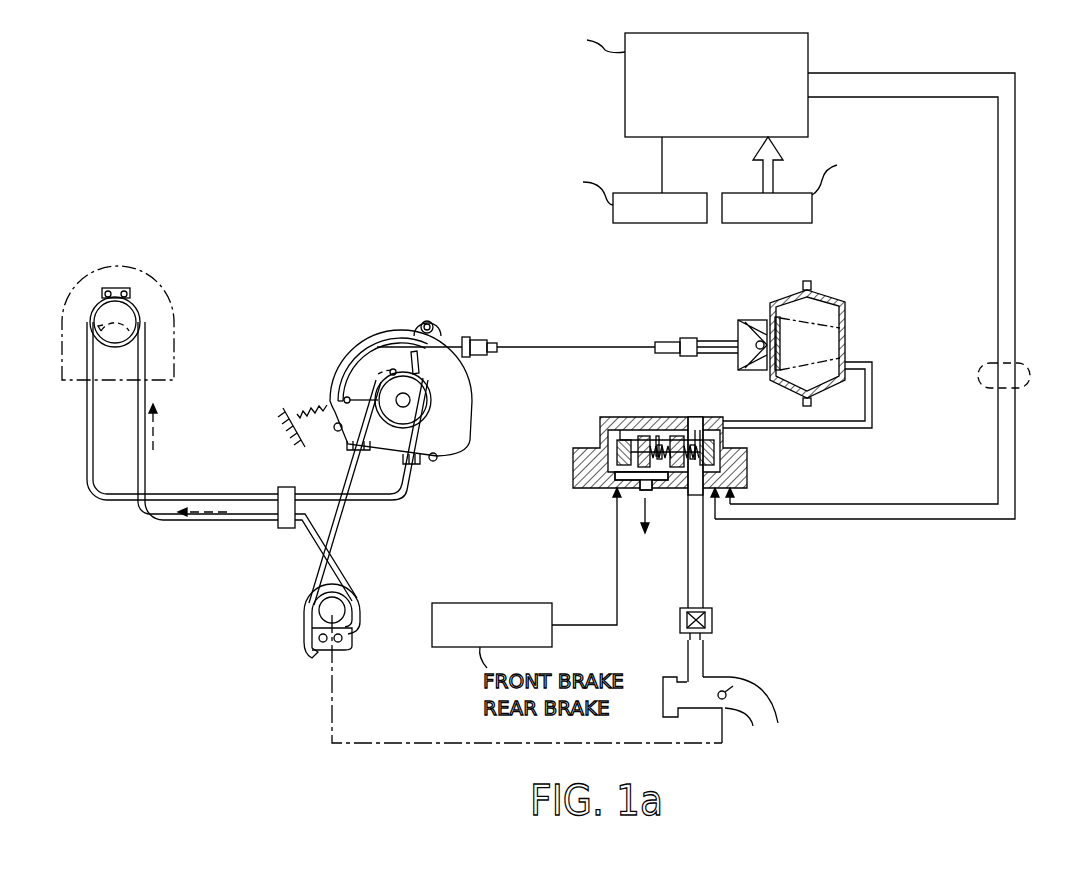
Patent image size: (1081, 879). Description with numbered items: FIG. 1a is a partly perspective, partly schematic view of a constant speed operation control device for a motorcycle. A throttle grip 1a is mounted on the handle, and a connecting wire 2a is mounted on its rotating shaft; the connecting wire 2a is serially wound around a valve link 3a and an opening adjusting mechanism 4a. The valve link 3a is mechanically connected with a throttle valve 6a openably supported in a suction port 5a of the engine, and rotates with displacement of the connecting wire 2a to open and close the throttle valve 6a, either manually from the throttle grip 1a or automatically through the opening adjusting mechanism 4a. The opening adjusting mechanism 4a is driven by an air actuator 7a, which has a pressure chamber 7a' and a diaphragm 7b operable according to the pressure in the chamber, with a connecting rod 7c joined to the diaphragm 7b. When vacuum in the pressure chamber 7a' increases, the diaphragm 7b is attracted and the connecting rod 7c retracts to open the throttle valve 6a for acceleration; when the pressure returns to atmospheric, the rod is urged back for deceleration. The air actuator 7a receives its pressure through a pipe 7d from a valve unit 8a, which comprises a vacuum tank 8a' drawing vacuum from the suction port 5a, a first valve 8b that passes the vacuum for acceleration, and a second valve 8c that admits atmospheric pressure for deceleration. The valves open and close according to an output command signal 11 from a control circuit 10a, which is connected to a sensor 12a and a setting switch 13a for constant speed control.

The throttle grip 1a is at (137, 306).
The connecting wire 2a is at (128, 500).
The valve link 3a is at (353, 598).
The opening adjusting mechanism 4a is at (377, 365).
The suction port 5a is at (779, 696).
The throttle valve 6a is at (724, 690).
The air actuator 7a is at (839, 341).
The pressure chamber 7a' is at (845, 343).
The diaphragm 7b is at (760, 320).
The connecting rod 7c is at (572, 347).
The pipe 7d is at (872, 395).
The valve unit 8a is at (677, 521).
The vacuum tank 8a' is at (716, 588).
The first valve 8b is at (695, 430).
The second valve 8c is at (658, 436).
The control circuit 10a is at (828, 42).
The output command signal 11 is at (1028, 365).
The sensor 12a is at (812, 210).
The setting switch 13a is at (643, 225).